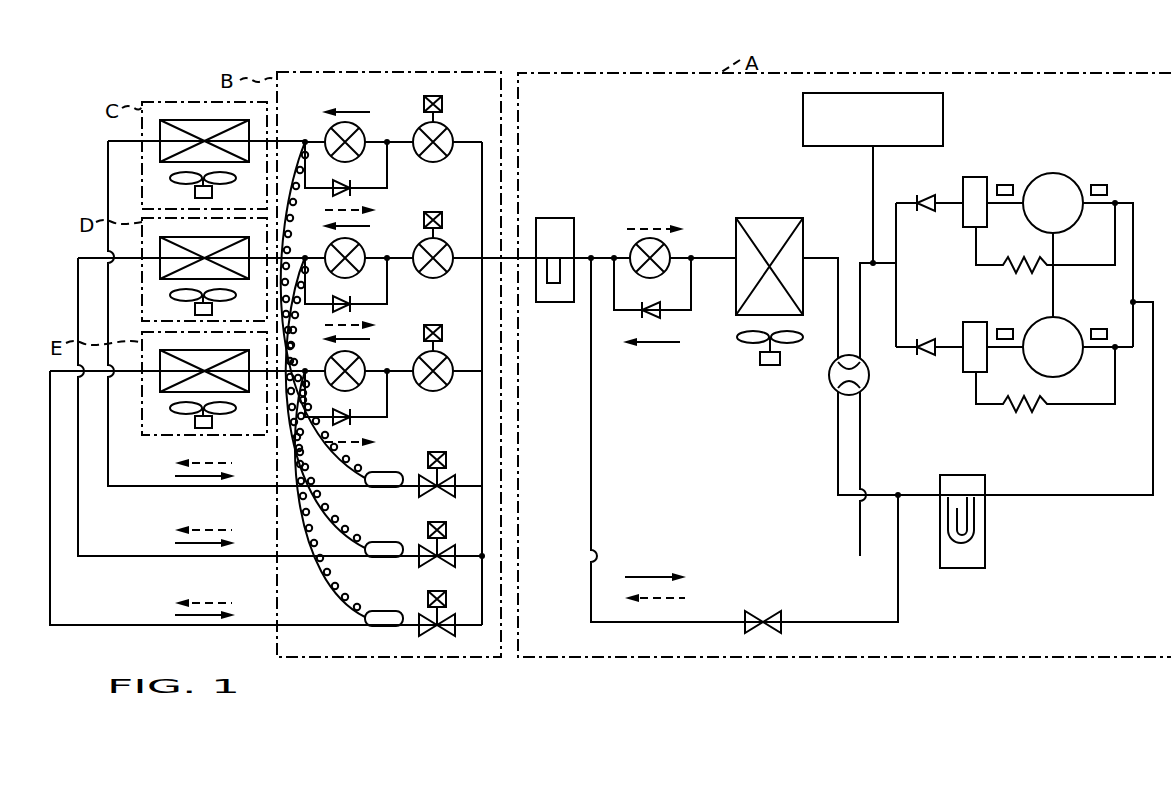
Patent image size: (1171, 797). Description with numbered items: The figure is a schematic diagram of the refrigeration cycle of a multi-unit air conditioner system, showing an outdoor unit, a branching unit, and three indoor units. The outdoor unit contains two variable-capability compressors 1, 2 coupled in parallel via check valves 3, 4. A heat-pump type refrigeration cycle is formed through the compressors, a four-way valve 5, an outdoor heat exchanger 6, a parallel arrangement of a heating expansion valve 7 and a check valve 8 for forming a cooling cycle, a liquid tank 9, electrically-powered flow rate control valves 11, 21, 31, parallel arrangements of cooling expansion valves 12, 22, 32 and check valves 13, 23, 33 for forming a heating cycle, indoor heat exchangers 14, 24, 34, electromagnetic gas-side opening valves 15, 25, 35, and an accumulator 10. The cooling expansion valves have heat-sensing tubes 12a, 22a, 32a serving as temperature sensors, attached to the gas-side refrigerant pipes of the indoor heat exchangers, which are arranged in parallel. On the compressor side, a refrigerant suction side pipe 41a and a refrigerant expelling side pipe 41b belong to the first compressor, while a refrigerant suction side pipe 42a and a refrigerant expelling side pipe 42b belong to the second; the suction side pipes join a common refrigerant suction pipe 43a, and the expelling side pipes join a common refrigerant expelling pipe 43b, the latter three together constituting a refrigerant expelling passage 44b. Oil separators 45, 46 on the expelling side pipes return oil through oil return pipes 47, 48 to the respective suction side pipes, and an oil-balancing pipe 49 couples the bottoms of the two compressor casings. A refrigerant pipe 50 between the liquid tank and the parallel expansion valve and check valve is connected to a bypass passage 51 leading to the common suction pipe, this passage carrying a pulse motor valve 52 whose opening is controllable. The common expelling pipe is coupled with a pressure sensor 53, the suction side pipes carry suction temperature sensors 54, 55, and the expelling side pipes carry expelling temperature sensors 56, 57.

The variable-capability compressor 1 is at (1055, 173).
The variable-capability compressor 2 is at (1056, 317).
The check valve 3 is at (926, 210).
The check valve 4 is at (925, 340).
The four-way valve 5 is at (832, 388).
The outdoor heat exchanger 6 is at (806, 228).
The heating expansion valve 7 is at (666, 253).
The check valve 8 is at (664, 314).
The liquid tank 9 is at (575, 228).
The accumulator 10 is at (961, 475).
The electrically-powered flow rate control valve 11 is at (448, 132).
The cooling expansion valve 12 is at (358, 134).
The check valve 13 is at (352, 188).
The indoor heat exchanger 14 is at (160, 150).
The gas-side opening valve 15 is at (444, 478).
The electrically-powered flow rate control valve 21 is at (448, 242).
The cooling expansion valve 22 is at (358, 246).
The check valve 23 is at (355, 302).
The indoor heat exchanger 24 is at (160, 267).
The gas-side opening valve 25 is at (438, 545).
The electrically-powered flow rate control valve 31 is at (438, 358).
The cooling expansion valve 32 is at (358, 369).
The check valve 33 is at (355, 414).
The indoor heat exchanger 34 is at (160, 379).
The gas-side opening valve 35 is at (438, 612).
The heat-sensing tube 12a is at (390, 472).
The heat-sensing tube 22a is at (386, 540).
The heat-sensing tube 32a is at (383, 611).
The refrigerant suction side pipe 41a is at (1134, 216).
The refrigerant expelling side pipe 41b is at (943, 203).
The refrigerant suction side pipe 42a is at (1126, 352).
The refrigerant expelling side pipe 42b is at (944, 351).
The common refrigerant suction pipe 43a is at (1090, 495).
The common refrigerant expelling pipe 43b is at (859, 244).
The refrigerant expelling passage 44b is at (898, 268).
The oil separator 45 is at (972, 227).
The oil separator 46 is at (972, 372).
The oil return pipe 47 is at (1080, 266).
The oil return pipe 48 is at (1050, 404).
The oil-balancing pipe 49 is at (1053, 290).
The refrigerant pipe 50 is at (605, 258).
The bypass passage 51 is at (620, 622).
The pulse motor valve 52 is at (784, 625).
The pressure sensor 53 is at (803, 118).
The suction temperature sensor 54 is at (1098, 185).
The suction temperature sensor 55 is at (1099, 329).
The expelling temperature sensor 56 is at (1006, 185).
The expelling temperature sensor 57 is at (1005, 329).